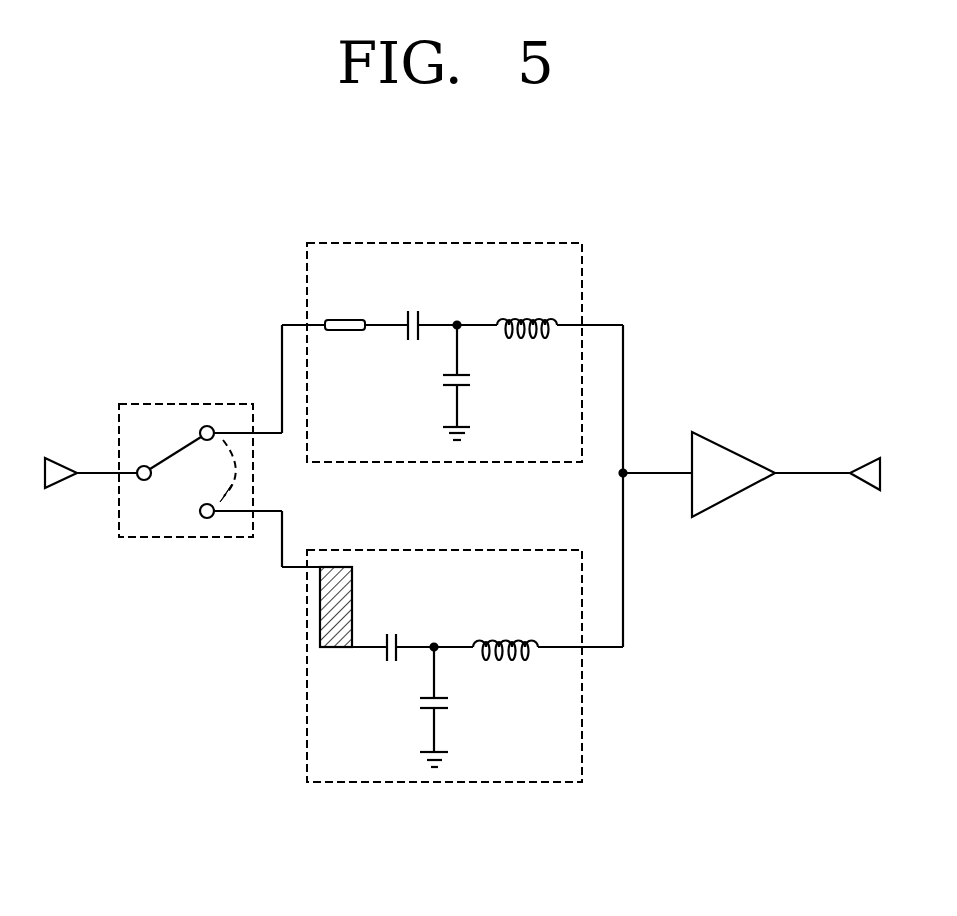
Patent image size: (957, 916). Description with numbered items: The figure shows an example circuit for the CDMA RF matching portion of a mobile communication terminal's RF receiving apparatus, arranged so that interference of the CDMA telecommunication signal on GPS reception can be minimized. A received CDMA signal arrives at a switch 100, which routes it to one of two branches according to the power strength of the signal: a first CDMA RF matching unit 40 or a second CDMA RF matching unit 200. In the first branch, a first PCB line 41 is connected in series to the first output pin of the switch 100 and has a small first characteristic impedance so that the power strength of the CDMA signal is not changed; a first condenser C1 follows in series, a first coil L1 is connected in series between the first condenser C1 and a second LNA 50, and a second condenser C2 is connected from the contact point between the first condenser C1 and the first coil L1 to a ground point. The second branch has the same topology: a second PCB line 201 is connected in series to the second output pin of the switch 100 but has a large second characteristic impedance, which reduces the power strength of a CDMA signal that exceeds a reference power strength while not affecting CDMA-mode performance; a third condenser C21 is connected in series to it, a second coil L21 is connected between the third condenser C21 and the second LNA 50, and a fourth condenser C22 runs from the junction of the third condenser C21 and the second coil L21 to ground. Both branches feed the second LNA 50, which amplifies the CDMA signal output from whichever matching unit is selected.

The switch 100 is at (187, 404).
The first CDMA RF matching unit 40 is at (442, 243).
The first PCB line 41 is at (347, 318).
The second CDMA RF matching unit 200 is at (519, 550).
The second PCB line 201 is at (340, 567).
The second LNA 50 is at (735, 450).
The first condenser C1 is at (411, 312).
The first coil L1 is at (527, 310).
The second condenser C2 is at (474, 382).
The third condenser C21 is at (394, 632).
The second coil L21 is at (505, 631).
The fourth condenser C22 is at (459, 707).